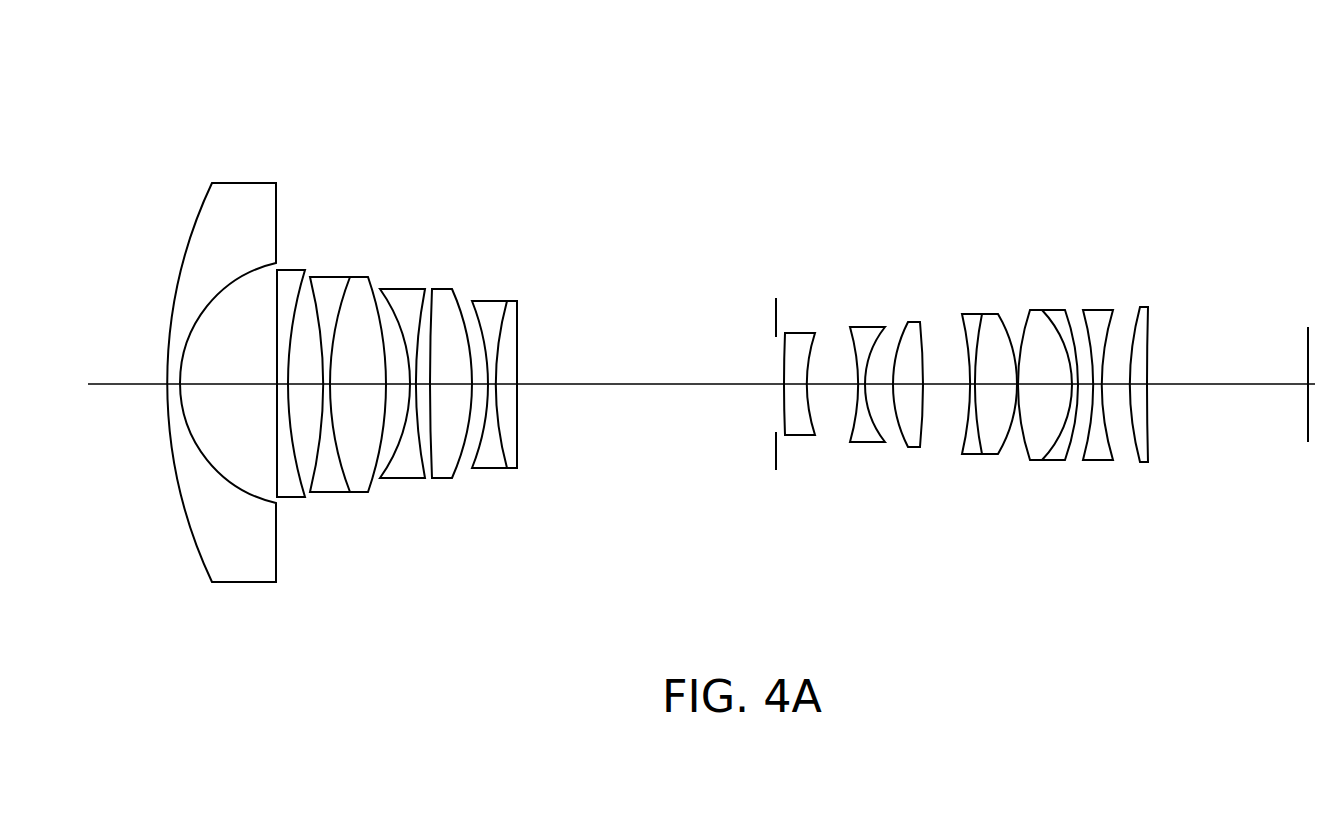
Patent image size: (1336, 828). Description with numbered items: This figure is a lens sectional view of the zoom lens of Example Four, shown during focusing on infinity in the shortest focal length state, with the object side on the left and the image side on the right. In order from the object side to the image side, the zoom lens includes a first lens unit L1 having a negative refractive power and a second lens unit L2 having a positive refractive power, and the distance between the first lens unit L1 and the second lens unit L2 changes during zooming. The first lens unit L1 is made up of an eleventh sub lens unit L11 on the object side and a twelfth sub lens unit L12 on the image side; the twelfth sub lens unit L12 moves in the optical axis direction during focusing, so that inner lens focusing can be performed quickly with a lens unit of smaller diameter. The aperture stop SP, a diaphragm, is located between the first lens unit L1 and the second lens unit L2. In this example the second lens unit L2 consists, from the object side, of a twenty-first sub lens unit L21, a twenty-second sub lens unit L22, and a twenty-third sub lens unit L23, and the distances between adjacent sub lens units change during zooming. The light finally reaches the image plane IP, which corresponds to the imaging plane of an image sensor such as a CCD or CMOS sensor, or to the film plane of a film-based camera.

The first lens unit L1 is at (517, 95).
The eleventh sub lens unit L11 is at (167, 152).
The twelfth sub lens unit L12 is at (488, 152).
The second lens unit L2 is at (1169, 96).
The twenty-first sub lens unit L21 is at (923, 130).
The twenty-second sub lens unit L22 is at (1077, 130).
The twenty-third sub lens unit L23 is at (1163, 130).
The aperture stop SP is at (770, 310).
The image plane IP is at (1305, 328).